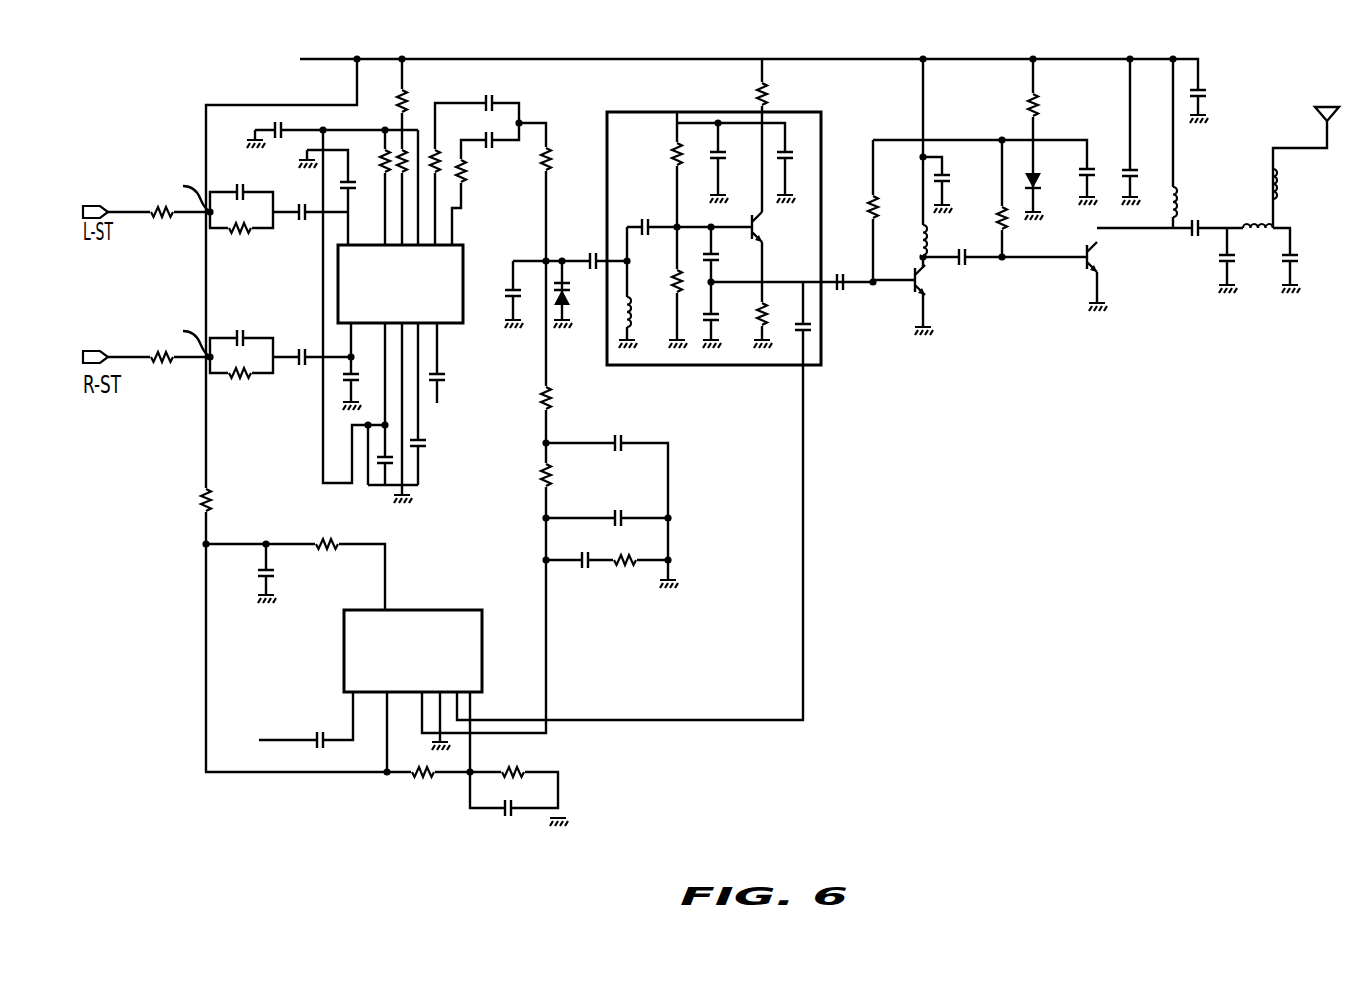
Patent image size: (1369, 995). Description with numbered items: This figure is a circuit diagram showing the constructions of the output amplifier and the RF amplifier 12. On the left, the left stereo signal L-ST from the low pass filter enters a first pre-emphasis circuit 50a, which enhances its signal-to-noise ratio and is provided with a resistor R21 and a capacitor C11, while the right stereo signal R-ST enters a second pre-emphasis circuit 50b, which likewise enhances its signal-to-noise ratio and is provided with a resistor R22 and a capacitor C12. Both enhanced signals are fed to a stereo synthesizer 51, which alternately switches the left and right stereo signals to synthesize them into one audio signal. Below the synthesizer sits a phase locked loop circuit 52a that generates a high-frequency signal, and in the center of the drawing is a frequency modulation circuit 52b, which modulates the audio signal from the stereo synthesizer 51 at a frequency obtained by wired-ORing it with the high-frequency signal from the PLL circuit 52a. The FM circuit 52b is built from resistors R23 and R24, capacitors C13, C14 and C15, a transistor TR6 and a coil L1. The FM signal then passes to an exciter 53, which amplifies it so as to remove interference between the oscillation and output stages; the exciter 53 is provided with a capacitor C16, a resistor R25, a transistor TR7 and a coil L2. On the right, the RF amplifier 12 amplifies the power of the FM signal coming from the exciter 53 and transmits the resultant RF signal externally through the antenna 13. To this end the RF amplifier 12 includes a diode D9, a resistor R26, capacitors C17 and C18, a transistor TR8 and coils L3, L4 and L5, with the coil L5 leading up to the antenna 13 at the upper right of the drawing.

The first pre-emphasis circuit 50a is at (185, 192).
The second pre-emphasis circuit 50b is at (185, 338).
The stereo synthesizer 51 is at (463, 272).
The phase locked loop (PLL) circuit 52a is at (420, 610).
The frequency modulation (FM) circuit 52b is at (827, 376).
The exciter 53 is at (860, 325).
The RF amplifier 12 is at (1042, 274).
The antenna 13 is at (1333, 118).
The capacitor C11 is at (241, 191).
The resistor R21 is at (240, 244).
The capacitor C12 is at (241, 337).
The resistor R22 is at (242, 389).
The resistor R23 is at (660, 156).
The resistor R24 is at (664, 284).
The capacitor C13 is at (649, 244).
The coil L1 is at (639, 311).
The capacitor C14 is at (727, 259).
The capacitor C15 is at (727, 314).
The transistor TR6 is at (777, 227).
The capacitor C16 is at (846, 296).
The resistor R25 is at (858, 209).
The coil L2 is at (937, 238).
The transistor TR7 is at (937, 282).
The resistor R26 is at (987, 219).
The capacitor C17 is at (981, 270).
The diode D9 is at (1045, 169).
The transistor TR8 is at (1110, 257).
The coil L3 is at (1189, 200).
The capacitor C18 is at (1196, 247).
The coil L4 is at (1258, 245).
The coil L5 is at (1286, 186).